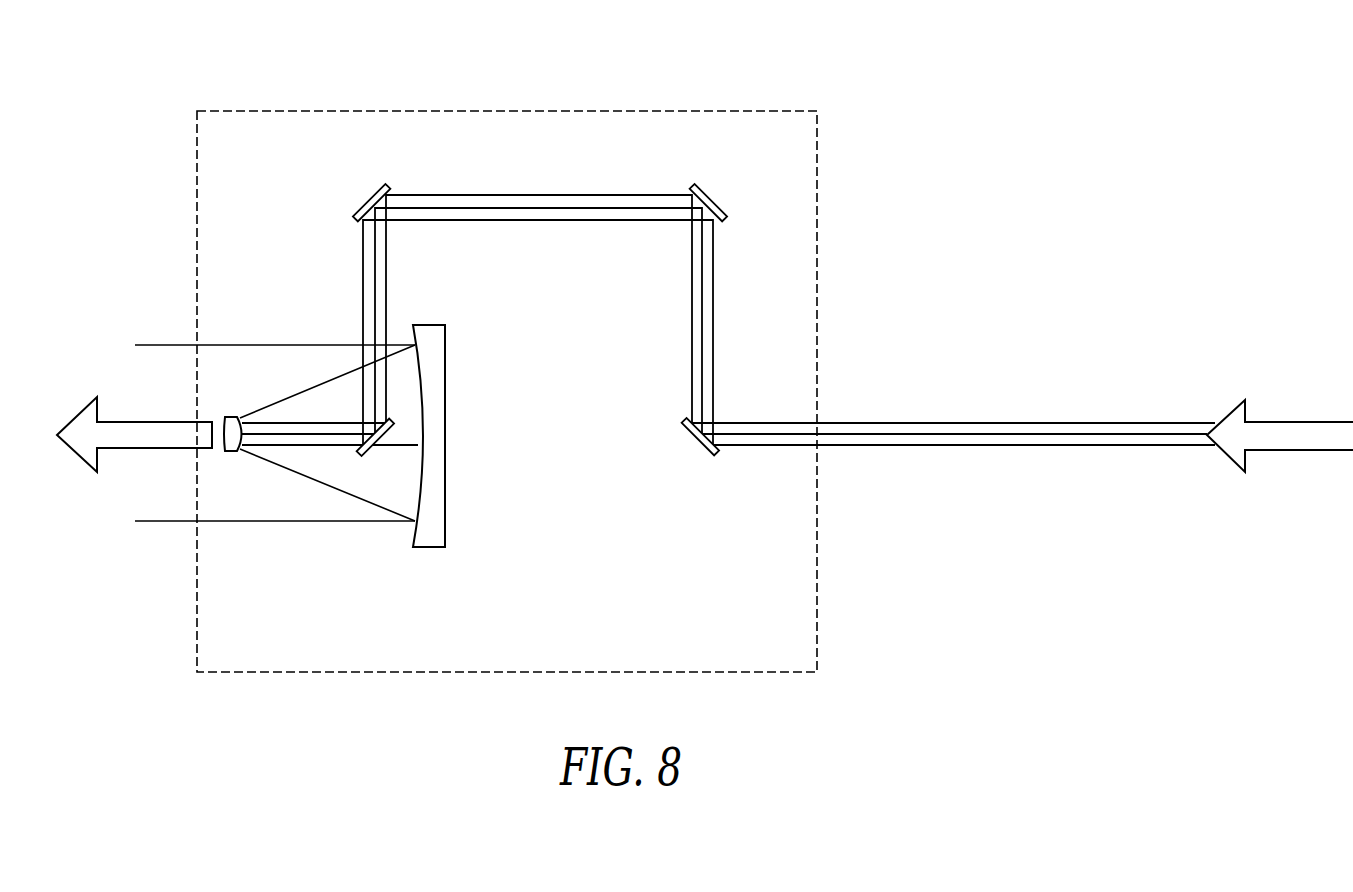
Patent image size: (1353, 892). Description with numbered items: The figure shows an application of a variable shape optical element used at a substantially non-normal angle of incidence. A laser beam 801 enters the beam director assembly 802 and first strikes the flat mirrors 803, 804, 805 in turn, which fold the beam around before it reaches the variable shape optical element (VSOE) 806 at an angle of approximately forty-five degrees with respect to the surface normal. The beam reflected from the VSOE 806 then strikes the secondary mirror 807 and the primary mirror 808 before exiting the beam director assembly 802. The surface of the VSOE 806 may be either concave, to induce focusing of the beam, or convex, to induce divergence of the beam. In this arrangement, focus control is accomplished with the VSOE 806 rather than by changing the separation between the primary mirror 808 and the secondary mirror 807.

The laser beam 801 is at (1312, 455).
The beam director assembly 802 is at (733, 109).
The flat mirror 803 is at (697, 452).
The flat mirror 804 is at (717, 191).
The flat mirror 805 is at (363, 200).
The variable shape optical element (VSOE) 806 is at (372, 453).
The secondary mirror 807 is at (229, 415).
The primary mirror 808 is at (446, 508).